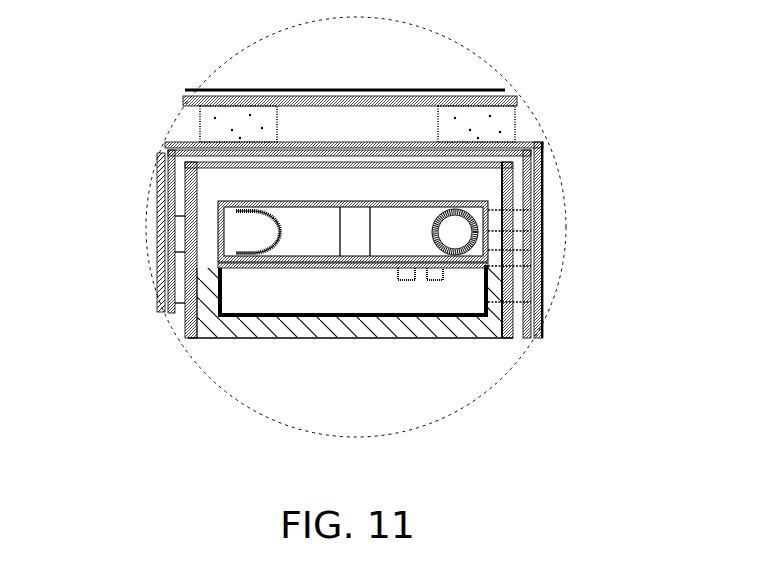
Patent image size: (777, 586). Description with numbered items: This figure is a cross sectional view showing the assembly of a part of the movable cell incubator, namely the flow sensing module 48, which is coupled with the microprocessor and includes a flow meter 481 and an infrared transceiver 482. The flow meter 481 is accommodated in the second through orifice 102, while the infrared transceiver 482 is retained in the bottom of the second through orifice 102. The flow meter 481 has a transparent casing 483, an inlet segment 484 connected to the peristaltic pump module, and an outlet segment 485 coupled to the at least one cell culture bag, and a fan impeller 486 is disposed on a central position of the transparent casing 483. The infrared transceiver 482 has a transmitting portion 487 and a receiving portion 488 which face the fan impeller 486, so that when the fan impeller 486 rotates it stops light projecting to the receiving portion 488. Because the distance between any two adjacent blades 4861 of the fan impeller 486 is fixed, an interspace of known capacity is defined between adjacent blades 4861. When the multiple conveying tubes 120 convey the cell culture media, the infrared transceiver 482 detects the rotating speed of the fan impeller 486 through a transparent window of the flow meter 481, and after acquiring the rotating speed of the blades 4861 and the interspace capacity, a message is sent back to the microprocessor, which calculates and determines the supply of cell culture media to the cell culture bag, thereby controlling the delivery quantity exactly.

The second through orifice 102 is at (215, 185).
The fan impeller 486 is at (316, 222).
The transparent casing 483 is at (383, 210).
The outlet segment 485 is at (222, 233).
The blades 4861 is at (397, 214).
The inlet segment 484 is at (482, 227).
The conveying tubes 120 is at (490, 277).
The flow sensing module 48 is at (259, 295).
The flow meter 481 is at (214, 252).
The infrared transceiver 482 is at (214, 298).
The transmitting portion 487 is at (407, 288).
The receiving portion 488 is at (432, 282).